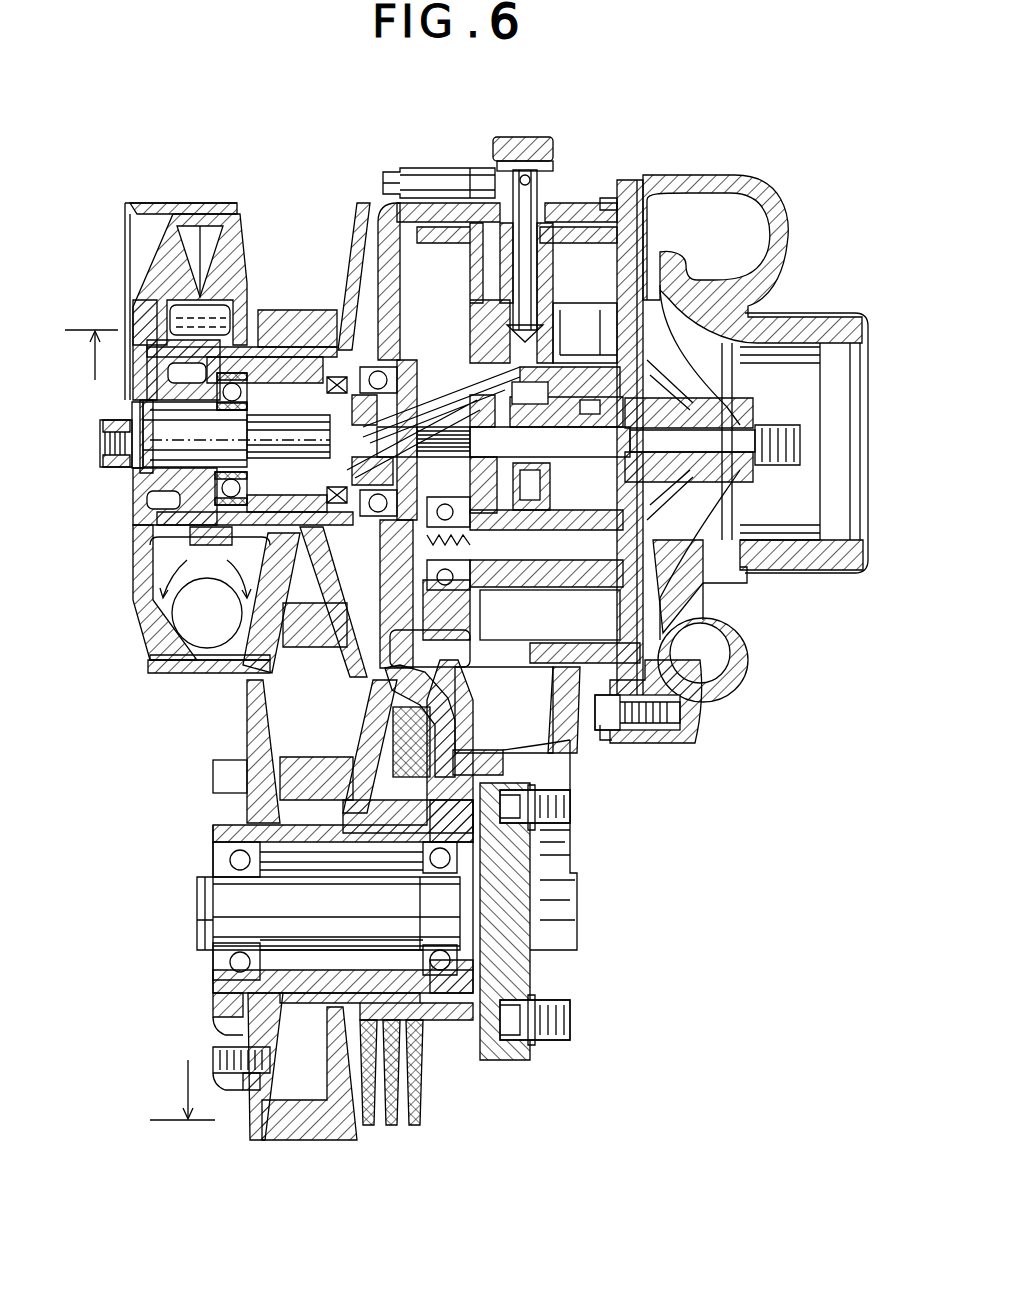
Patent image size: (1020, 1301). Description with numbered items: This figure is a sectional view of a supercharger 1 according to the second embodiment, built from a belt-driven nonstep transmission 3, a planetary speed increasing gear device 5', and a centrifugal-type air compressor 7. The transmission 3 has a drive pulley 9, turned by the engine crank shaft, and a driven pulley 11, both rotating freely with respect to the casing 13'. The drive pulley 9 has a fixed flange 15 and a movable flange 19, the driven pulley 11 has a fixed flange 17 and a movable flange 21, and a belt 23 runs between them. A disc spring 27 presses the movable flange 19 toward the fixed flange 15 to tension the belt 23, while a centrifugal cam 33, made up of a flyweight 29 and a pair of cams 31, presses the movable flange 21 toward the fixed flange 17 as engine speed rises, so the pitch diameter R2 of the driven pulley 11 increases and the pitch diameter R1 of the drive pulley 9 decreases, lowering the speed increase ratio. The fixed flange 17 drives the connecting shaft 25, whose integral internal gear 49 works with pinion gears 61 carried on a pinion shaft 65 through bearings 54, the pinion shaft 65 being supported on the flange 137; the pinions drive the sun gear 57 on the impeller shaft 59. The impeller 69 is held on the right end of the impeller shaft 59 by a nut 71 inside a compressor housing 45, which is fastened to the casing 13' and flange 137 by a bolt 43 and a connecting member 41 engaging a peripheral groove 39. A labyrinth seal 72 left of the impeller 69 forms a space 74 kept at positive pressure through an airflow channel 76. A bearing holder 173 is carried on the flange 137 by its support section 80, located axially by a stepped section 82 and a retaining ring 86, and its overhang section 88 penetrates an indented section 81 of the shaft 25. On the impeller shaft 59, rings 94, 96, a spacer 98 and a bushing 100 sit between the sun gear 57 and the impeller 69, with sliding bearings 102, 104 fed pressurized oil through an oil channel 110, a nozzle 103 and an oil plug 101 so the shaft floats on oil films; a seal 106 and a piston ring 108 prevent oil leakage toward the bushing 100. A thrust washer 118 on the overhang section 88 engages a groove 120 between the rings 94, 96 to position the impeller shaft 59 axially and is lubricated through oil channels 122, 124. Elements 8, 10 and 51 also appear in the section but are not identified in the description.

The supercharger 1 is at (763, 150).
The belt-driven nonstep transmission 3 is at (122, 195).
The speed increasing gear device 5' is at (473, 450).
The centrifugal-type air compressor 7 is at (487, 287).
The bearing retainer 8 is at (352, 440).
The drive pulley 9 is at (186, 856).
The oil passage 10 is at (486, 350).
The driven pulley 11 is at (126, 676).
The casing 13' is at (586, 397).
The fixed flange 15 is at (262, 718).
The fixed flange 17 is at (352, 236).
The movable flange 19 is at (375, 712).
The movable flange 21 is at (237, 238).
The belt 23 is at (290, 310).
The connecting shaft 25 is at (240, 436).
The disc spring 27 is at (411, 1137).
The flyweight 29 is at (224, 630).
The cams 31 is at (205, 578).
The centrifugal cam 33 is at (212, 682).
The peripheral groove 39 is at (604, 198).
The connecting member 41 is at (612, 740).
The bolt 43 is at (600, 742).
The compressor housing 45 is at (777, 272).
The internal gear 49 is at (516, 721).
The shaft nut 51 is at (150, 444).
The bearing 54 is at (477, 623).
The sun gear 57 is at (372, 545).
The impeller shaft 59 is at (805, 440).
The pinion gear 61 is at (490, 637).
The pinion shaft 65 is at (550, 614).
The impeller 69 is at (745, 412).
The nut 71 is at (778, 465).
The labyrinth seal 72 is at (652, 355).
The space 74 is at (676, 557).
The airflow channel 76 is at (640, 200).
The support section 80 is at (578, 280).
The indented section 81 is at (400, 450).
The stepped section 82 is at (585, 333).
The retaining ring 86 is at (470, 320).
The overhang section 88 is at (470, 385).
The ring 94 is at (439, 442).
The ring 96 is at (550, 442).
The spacer 98 is at (663, 442).
The bushing 100 is at (689, 417).
The oil plug 101 is at (493, 152).
The sliding bearing 102 is at (250, 480).
The nozzle 103 is at (540, 264).
The sliding bearing 104 is at (552, 486).
The seal 106 is at (668, 395).
The piston ring 108 is at (689, 467).
The oil channel 110 is at (542, 293).
The thrust washer 118 is at (462, 492).
The groove 120 is at (566, 397).
The oil channel 122 is at (580, 530).
The oil channel 124 is at (525, 537).
The flange 137 is at (613, 292).
The bearing holder 173 is at (566, 292).
The pulley pitch diameter R1 is at (182, 1090).
The pulley pitch diameter R2 is at (85, 360).